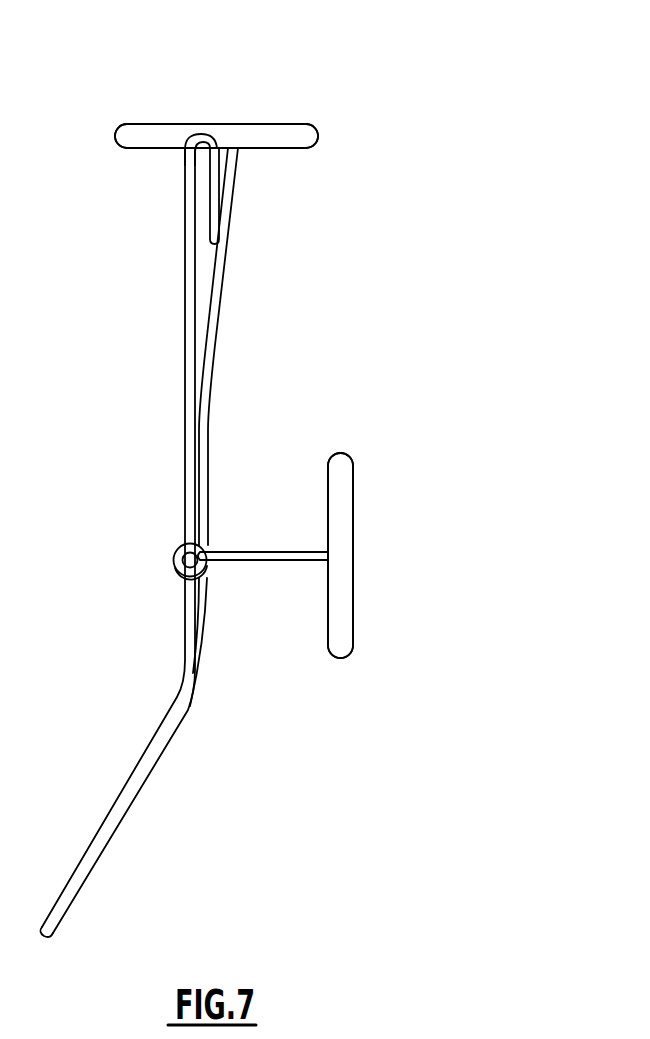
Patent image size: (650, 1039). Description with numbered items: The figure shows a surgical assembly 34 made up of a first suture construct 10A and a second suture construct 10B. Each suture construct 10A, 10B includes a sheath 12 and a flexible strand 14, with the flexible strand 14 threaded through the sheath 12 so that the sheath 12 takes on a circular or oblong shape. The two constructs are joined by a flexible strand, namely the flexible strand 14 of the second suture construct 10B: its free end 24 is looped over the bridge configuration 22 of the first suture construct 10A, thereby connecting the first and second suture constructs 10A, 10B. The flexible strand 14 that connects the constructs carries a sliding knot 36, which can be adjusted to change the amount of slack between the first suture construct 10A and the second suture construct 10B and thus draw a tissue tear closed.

The surgical assembly 34 is at (384, 111).
The first suture construct 10A is at (272, 119).
The second suture construct 10B is at (359, 505).
The sheath 12 is at (318, 136).
The flexible strand 14 is at (217, 173).
The bridge configuration 22 is at (187, 138).
The free end 24 is at (52, 929).
The sliding knot 36 is at (176, 548).